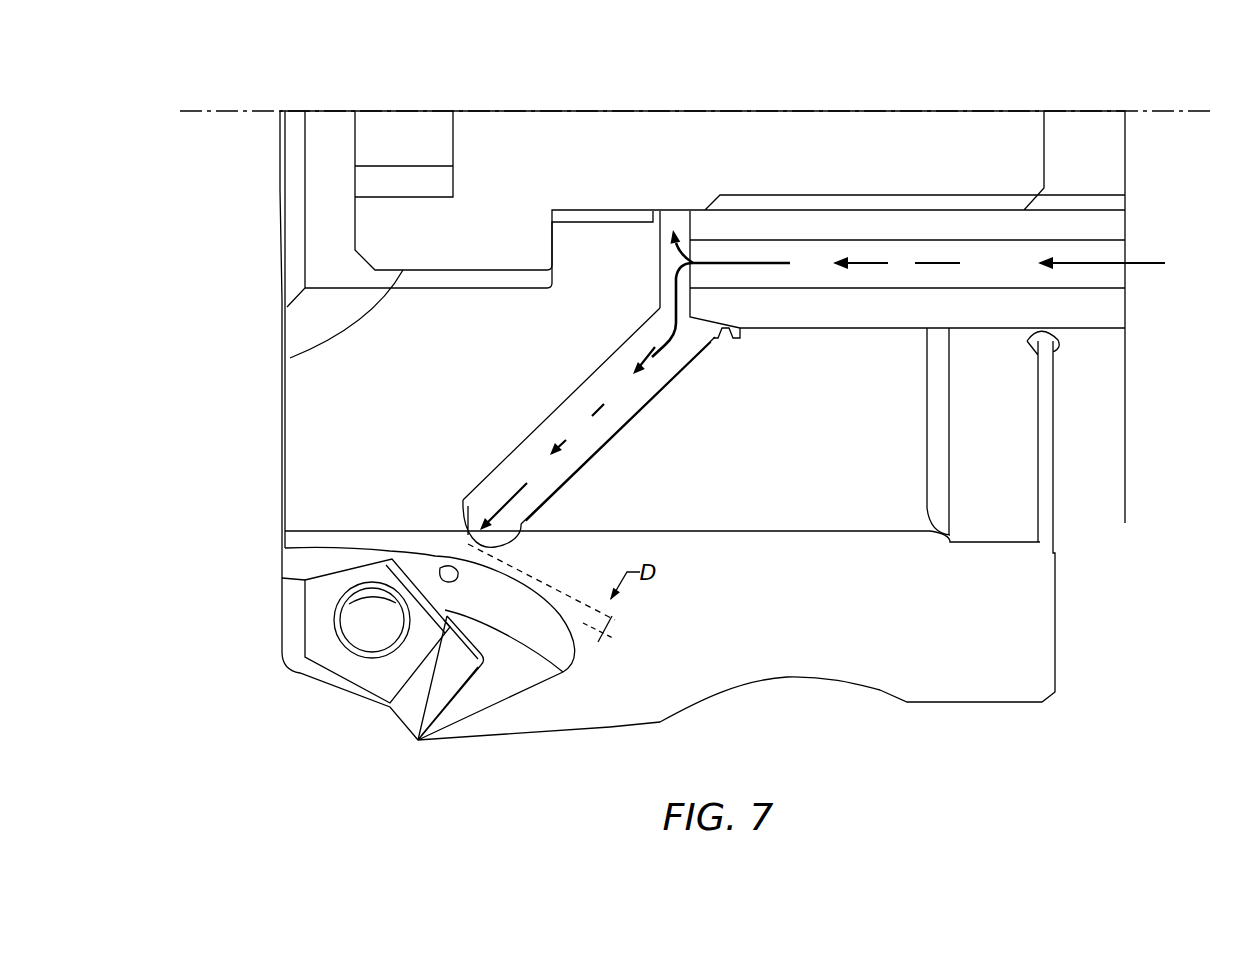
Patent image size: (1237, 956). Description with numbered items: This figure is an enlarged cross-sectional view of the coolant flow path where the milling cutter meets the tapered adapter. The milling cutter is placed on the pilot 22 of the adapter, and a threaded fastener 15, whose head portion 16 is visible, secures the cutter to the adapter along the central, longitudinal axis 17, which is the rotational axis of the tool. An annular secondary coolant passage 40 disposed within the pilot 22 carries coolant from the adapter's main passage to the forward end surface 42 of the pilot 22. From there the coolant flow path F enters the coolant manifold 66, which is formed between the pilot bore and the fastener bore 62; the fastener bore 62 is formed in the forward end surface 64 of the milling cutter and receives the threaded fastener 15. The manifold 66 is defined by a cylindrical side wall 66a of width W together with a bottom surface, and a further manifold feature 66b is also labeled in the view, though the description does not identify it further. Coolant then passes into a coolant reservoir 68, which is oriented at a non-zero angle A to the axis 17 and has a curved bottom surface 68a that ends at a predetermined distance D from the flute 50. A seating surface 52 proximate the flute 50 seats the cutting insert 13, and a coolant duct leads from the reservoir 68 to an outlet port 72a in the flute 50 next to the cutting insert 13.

The cutting insert 13 is at (305, 699).
The threaded fastener 15 is at (345, 138).
The head portion 16 is at (287, 360).
The central longitudinal axis 17 is at (1193, 108).
The pilot 22 is at (822, 335).
The secondary coolant passage 40 is at (833, 240).
The forward end surface 42 is at (690, 210).
The flute 50 is at (501, 670).
The seating surface 52 is at (315, 628).
The fastener bore 62 is at (333, 208).
The forward end surface 64 is at (270, 462).
The coolant manifold 66 is at (668, 262).
The cylindrical side wall 66a is at (730, 342).
The flow path branch 66b is at (688, 224).
The coolant reservoir 68 is at (605, 458).
The curved bottom surface 68a is at (460, 514).
The outlet port 72a is at (452, 583).